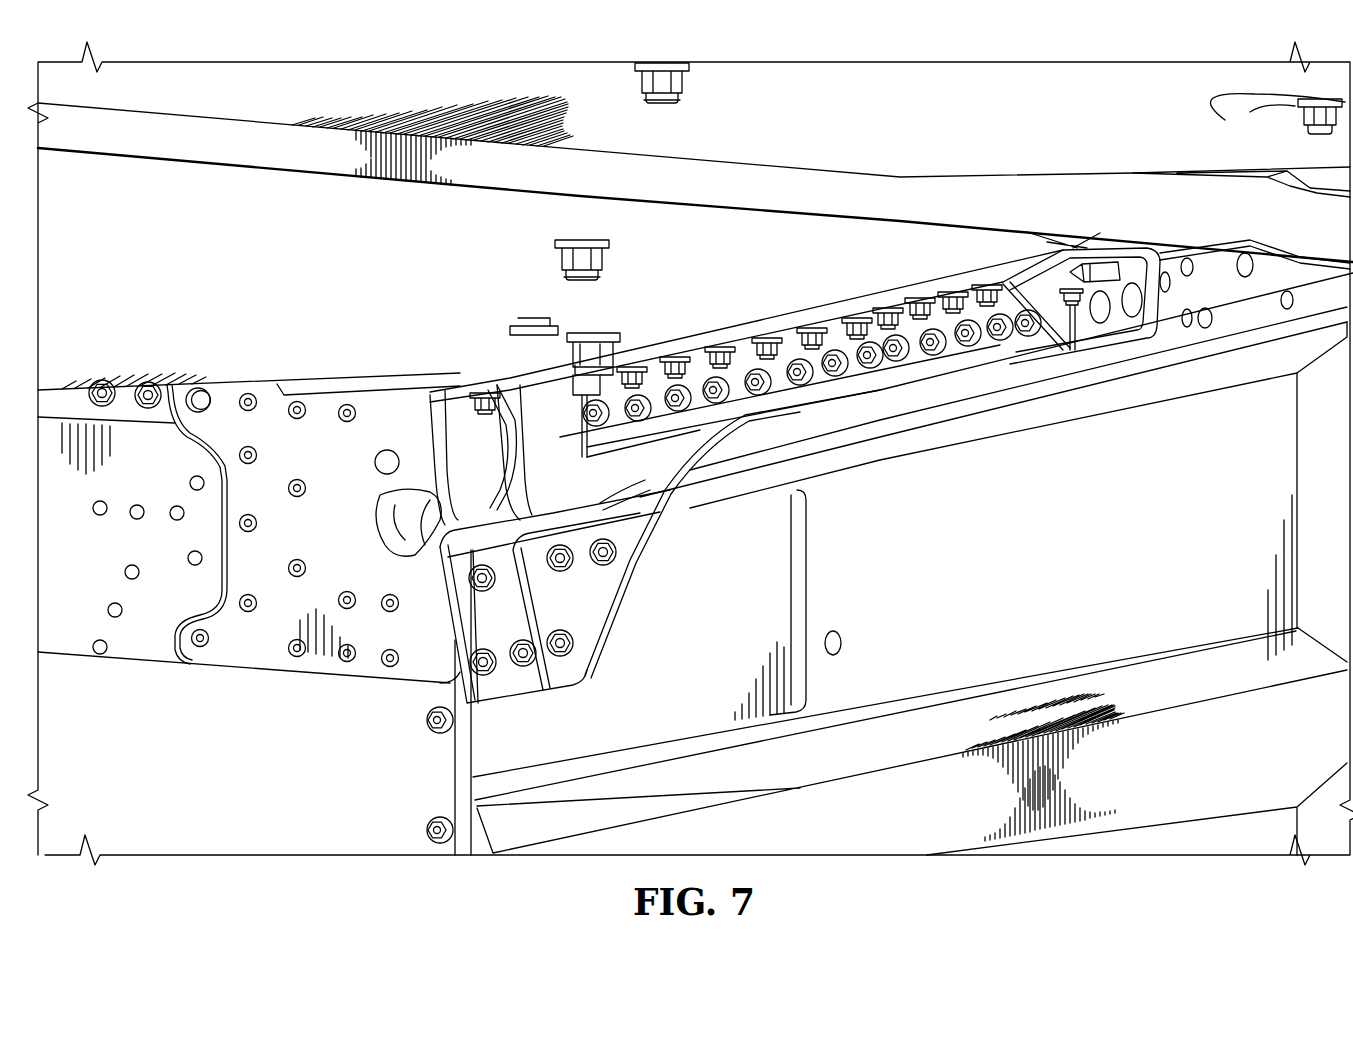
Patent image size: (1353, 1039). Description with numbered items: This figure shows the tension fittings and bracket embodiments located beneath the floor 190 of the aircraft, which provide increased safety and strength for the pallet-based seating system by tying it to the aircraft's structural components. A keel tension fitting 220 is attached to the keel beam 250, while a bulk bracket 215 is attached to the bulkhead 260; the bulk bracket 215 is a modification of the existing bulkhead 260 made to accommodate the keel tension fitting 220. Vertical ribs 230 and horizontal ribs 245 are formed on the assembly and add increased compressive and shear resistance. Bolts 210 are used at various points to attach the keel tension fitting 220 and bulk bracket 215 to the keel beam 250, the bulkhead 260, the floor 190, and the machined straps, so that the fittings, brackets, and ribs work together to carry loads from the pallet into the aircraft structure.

The floor 190 is at (334, 264).
The bolts 210 is at (248, 393).
The bulk bracket 215 is at (253, 653).
The keel tension fitting 220 is at (685, 494).
The vertical ribs 230 is at (453, 430).
The horizontal ribs 245 is at (400, 507).
The keel beam 250 is at (1140, 564).
The bulkhead 260 is at (143, 647).